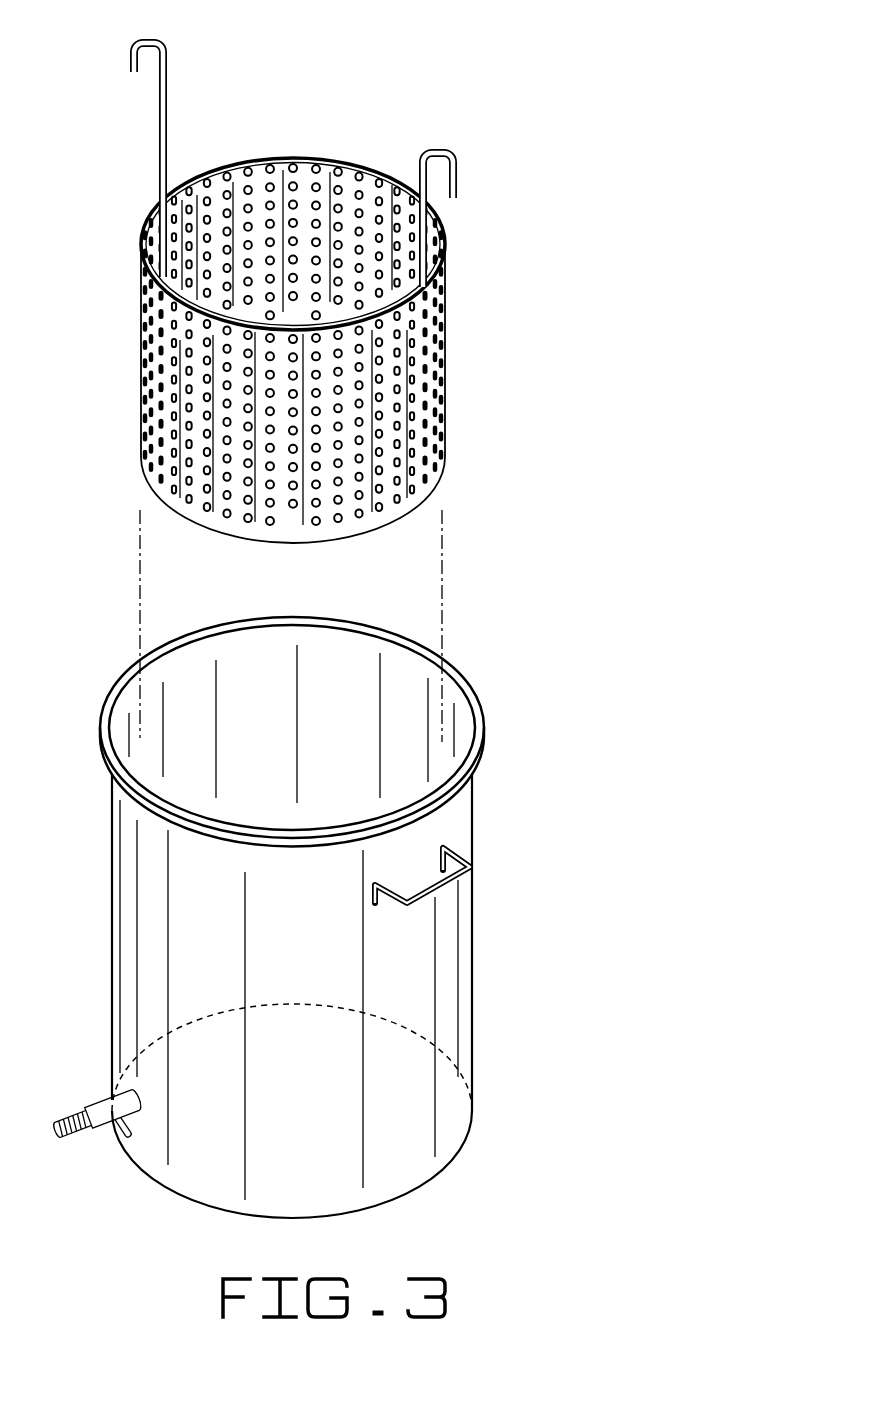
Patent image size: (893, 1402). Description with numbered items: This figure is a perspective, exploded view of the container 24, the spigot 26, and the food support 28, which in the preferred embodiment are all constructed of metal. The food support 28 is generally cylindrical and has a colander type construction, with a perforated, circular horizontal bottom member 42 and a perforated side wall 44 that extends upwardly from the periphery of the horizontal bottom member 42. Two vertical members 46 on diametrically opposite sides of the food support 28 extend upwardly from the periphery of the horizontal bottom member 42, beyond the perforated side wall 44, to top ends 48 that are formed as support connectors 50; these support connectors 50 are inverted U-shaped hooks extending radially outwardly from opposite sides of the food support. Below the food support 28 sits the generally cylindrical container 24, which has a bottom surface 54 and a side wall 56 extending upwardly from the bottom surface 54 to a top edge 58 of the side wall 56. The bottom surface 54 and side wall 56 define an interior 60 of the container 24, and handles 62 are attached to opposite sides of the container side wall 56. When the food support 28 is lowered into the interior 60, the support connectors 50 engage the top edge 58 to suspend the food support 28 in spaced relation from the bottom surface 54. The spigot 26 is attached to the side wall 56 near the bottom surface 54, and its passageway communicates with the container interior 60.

The container 24 is at (318, 917).
The spigot 26 is at (104, 1108).
The food support 28 is at (351, 285).
The horizontal bottom member 42 is at (353, 540).
The perforated side wall 44 is at (432, 343).
The vertical members 46 is at (170, 128).
The top ends 48 is at (168, 58).
The support connectors 50 is at (135, 43).
The bottom surface 54 is at (440, 1188).
The side wall 56 is at (455, 1033).
The top edge 58 is at (482, 738).
The interior 60 is at (350, 755).
The handles 62 is at (452, 886).